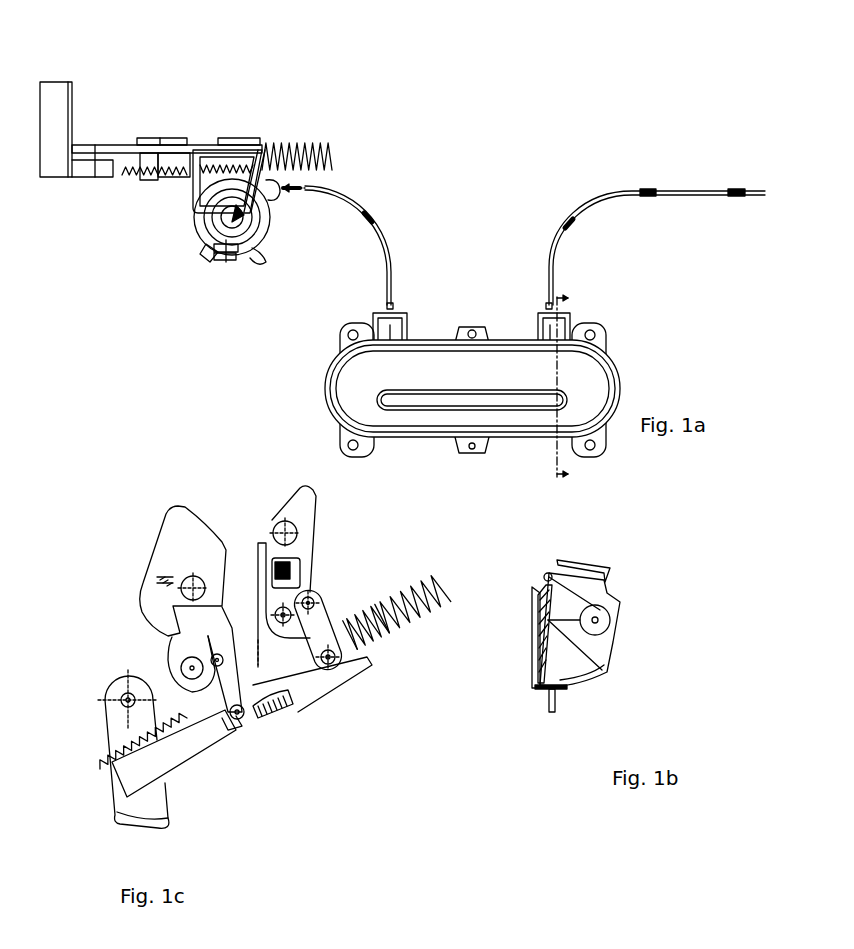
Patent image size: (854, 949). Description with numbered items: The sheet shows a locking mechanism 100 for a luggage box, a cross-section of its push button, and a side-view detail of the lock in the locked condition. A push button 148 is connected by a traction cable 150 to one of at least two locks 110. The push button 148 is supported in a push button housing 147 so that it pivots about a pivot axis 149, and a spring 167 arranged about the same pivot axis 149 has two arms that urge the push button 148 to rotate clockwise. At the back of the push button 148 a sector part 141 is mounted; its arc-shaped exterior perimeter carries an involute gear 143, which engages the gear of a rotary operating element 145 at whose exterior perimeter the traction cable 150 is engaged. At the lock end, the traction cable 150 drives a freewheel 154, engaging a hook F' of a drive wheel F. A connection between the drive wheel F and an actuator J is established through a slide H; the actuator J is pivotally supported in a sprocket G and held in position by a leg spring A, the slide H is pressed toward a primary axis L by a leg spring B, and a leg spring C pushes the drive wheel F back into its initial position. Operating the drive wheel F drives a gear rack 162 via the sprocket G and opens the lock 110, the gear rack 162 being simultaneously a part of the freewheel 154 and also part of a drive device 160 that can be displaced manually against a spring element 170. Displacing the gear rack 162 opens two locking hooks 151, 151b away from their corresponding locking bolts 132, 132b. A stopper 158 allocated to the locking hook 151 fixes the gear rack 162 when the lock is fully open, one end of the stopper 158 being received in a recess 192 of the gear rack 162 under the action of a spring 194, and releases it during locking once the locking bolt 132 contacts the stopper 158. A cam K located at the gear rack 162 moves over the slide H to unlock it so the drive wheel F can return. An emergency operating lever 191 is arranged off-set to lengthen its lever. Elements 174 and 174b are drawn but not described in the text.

In FIG. 1a, the locking mechanism 100 is at (498, 182).
In FIG. 1a, the lock 110 is at (141, 108).
In FIG. 1c, the lock 110 is at (216, 478).
In FIG. 1c, the locking bolt 132 is at (291, 533).
In FIG. 1c, the locking bolt 132b is at (186, 586).
In FIG. 1b, the sector part 141 is at (567, 593).
In FIG. 1b, the involute gear 143 is at (558, 628).
In FIG. 1b, the rotary operating element 145 is at (606, 617).
In FIG. 1b, the push button housing 147 is at (582, 562).
In FIG. 1a, the push button 148 is at (383, 416).
In FIG. 1b, the push button 148 is at (533, 645).
In FIG. 1b, the pivot axis 149 is at (546, 573).
In FIG. 1a, the traction cable 150 is at (385, 237).
In FIG. 1c, the locking hook 151 is at (308, 500).
In FIG. 1c, the locking hook 151b is at (223, 550).
In FIG. 1a, the freewheel 154 is at (306, 115).
In FIG. 1c, the stopper 158 is at (282, 723).
In FIG. 1c, the drive device 160 is at (360, 703).
In FIG. 1a, the gear rack 162 is at (127, 177).
In FIG. 1c, the gear rack 162 is at (178, 748).
In FIG. 1b, the spring 167 is at (597, 648).
In FIG. 1c, the spring element 170 is at (403, 633).
In FIG. 1c, the link 174 is at (322, 618).
In FIG. 1c, the pawl 174b is at (187, 520).
In FIG. 1a, the emergency operating lever 191 is at (53, 88).
In FIG. 1c, the emergency operating lever 191 is at (157, 802).
In FIG. 1a, the recess 192 is at (150, 180).
In FIG. 1c, the recess 192 is at (247, 723).
In FIG. 1c, the spring 194 is at (287, 570).
In FIG. 1a, the sprocket G is at (217, 210).
In FIG. 1a, the leg spring C is at (230, 208).
In FIG. 1a, the drive wheel F is at (292, 229).
In FIG. 1a, the hook F' is at (292, 200).
In FIG. 1a, the primary axis L is at (247, 221).
In FIG. 1a, the slide H is at (257, 248).
In FIG. 1a, the cam K is at (214, 242).
In FIG. 1a, the leg spring A is at (222, 248).
In FIG. 1a, the leg spring B is at (225, 255).
In FIG. 1a, the actuator J is at (233, 255).